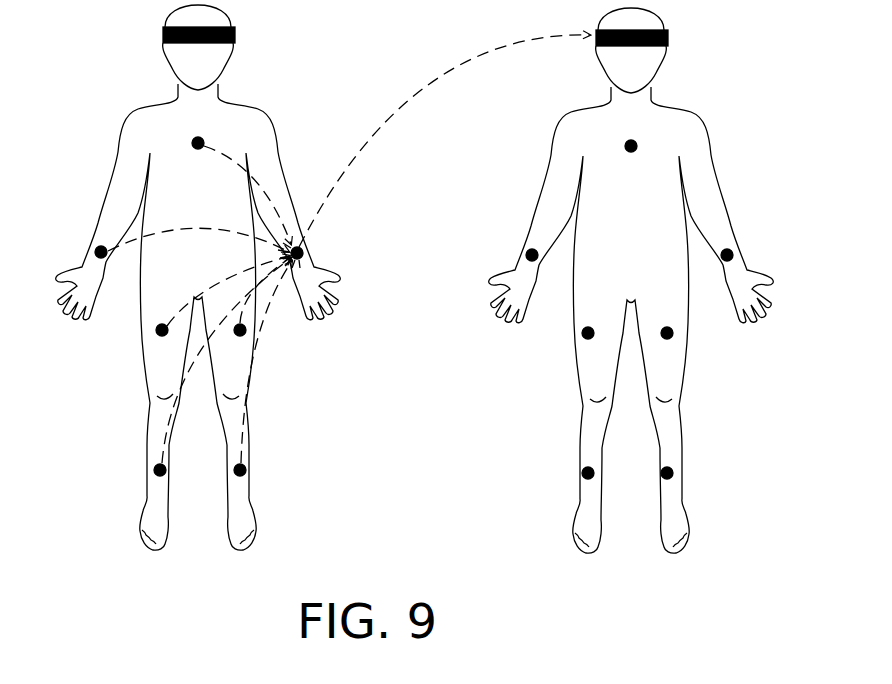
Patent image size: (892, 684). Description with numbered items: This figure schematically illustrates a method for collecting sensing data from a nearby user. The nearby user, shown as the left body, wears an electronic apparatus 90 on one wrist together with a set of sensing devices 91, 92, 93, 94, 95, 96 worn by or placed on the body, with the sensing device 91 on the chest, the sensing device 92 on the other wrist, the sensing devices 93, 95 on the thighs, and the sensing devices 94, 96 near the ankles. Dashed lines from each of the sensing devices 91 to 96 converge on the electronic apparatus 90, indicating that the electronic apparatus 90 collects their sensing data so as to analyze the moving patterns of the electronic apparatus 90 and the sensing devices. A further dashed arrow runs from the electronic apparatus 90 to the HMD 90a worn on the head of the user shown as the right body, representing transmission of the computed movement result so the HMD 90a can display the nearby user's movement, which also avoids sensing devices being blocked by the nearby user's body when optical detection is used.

The electronic apparatus 90 is at (303, 253).
The HMD 90a is at (669, 32).
The sensing device 91 is at (193, 141).
The sensing device 92 is at (97, 247).
The sensing device 93 is at (157, 331).
The sensing device 94 is at (155, 471).
The sensing device 95 is at (245, 331).
The sensing device 96 is at (245, 471).